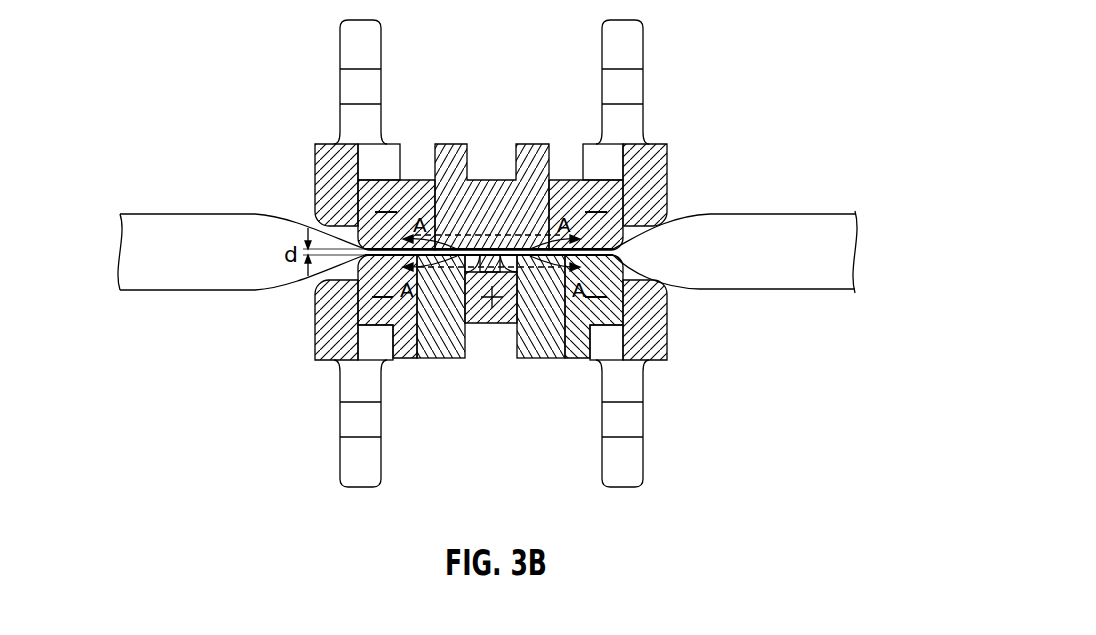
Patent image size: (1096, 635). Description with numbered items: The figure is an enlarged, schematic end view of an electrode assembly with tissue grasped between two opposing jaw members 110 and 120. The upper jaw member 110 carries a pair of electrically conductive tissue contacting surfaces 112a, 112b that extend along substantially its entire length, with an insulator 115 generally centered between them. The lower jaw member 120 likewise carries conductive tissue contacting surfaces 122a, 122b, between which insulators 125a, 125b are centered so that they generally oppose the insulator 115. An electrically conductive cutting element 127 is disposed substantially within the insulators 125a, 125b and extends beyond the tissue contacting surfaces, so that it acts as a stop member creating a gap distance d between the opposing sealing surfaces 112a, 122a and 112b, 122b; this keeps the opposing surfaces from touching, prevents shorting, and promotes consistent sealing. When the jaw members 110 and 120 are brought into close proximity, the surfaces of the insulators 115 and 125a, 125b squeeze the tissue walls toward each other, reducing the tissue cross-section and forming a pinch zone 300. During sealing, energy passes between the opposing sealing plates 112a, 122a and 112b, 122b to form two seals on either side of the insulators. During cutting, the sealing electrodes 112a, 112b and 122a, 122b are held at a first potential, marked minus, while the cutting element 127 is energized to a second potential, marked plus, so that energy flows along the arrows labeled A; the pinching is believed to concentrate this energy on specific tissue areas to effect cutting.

The jaw member 110 is at (502, 135).
The tissue contacting surface 112a is at (390, 242).
The tissue contacting surface 112b is at (613, 240).
The insulator 115 is at (536, 144).
The jaw member 120 is at (504, 371).
The tissue contacting surface 122a is at (390, 261).
The tissue contacting surface 122b is at (613, 265).
The insulator 125a is at (449, 359).
The insulator 125b is at (541, 359).
The cutting element 127 is at (488, 324).
The pinch zone 300 is at (503, 247).